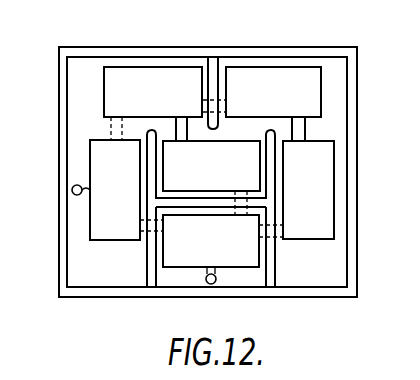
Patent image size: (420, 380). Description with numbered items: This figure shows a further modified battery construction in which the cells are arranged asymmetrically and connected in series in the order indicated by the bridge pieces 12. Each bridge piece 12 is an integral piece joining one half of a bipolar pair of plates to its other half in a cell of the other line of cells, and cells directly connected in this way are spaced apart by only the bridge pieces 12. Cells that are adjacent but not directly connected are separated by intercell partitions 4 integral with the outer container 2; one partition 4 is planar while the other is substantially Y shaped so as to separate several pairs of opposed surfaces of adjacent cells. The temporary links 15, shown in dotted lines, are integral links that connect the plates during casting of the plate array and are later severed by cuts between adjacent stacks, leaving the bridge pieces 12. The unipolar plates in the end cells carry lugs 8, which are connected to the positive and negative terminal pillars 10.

The container 2 is at (353, 79).
The intercell partition 4 is at (212, 66).
The lug 8 is at (76, 187).
The terminal pillar 10 is at (211, 284).
The bridge piece 12 is at (300, 131).
The temporary link 15 is at (111, 128).